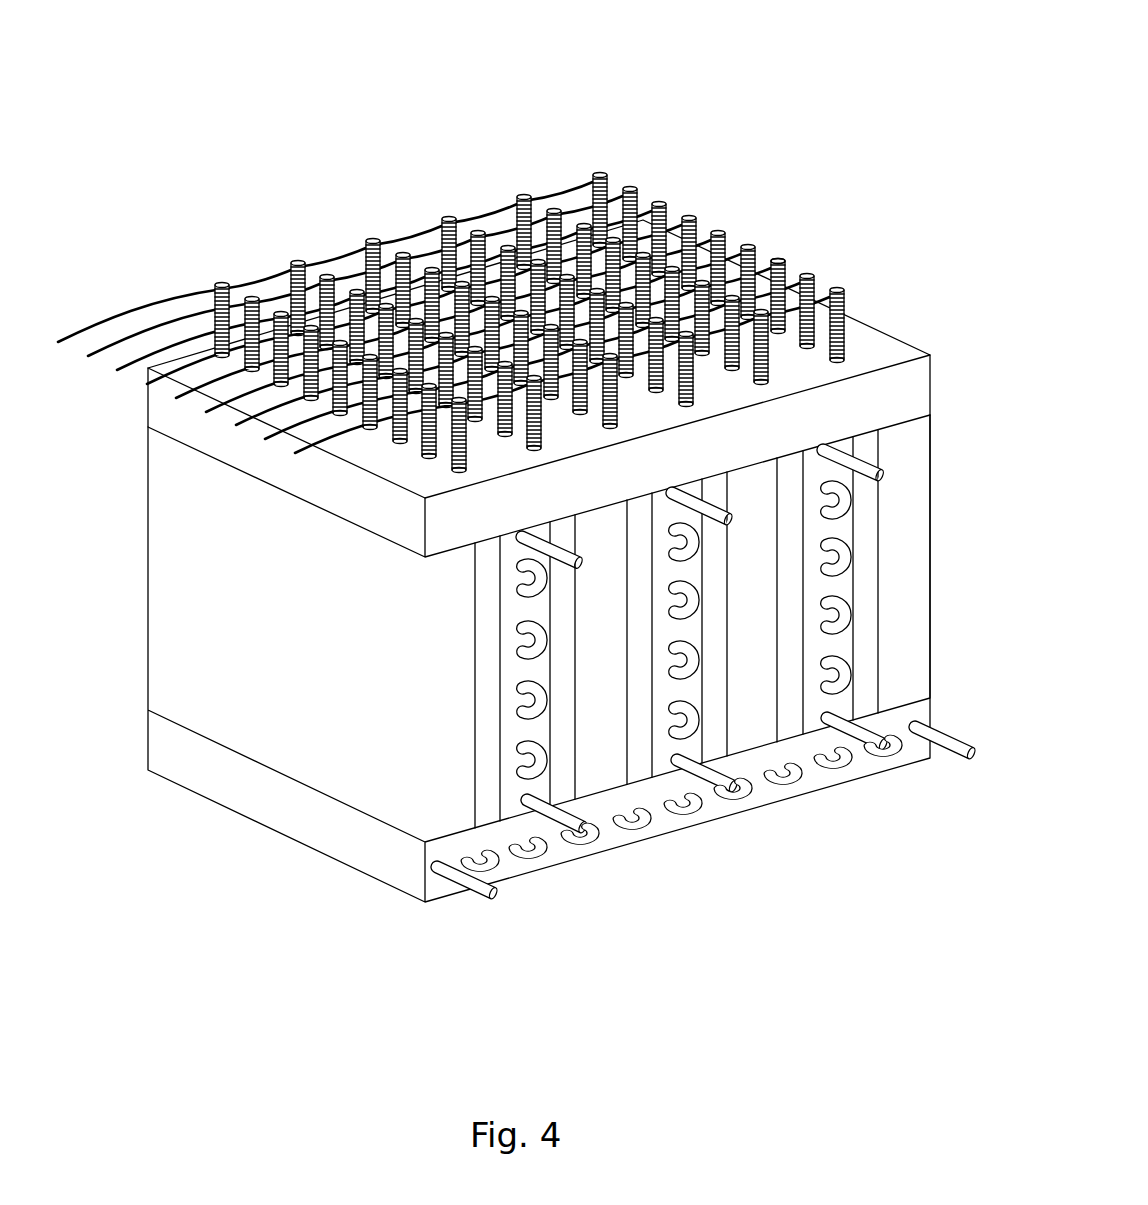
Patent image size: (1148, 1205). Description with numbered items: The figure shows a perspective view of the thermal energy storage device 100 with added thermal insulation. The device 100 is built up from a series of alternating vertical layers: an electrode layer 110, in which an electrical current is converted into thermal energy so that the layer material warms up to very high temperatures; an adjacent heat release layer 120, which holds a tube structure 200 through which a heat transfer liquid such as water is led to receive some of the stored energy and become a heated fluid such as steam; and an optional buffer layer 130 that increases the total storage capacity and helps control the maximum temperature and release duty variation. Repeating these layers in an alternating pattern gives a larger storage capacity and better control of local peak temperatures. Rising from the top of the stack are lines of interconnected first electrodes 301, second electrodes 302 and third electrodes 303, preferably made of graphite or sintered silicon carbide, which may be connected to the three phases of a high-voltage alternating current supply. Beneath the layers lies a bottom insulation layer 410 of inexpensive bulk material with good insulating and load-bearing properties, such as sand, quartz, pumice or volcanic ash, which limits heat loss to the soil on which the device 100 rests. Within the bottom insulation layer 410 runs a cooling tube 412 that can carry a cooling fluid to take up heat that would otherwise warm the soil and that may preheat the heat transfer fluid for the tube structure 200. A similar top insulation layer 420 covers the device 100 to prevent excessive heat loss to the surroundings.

The thermal energy storage device 100 is at (707, 118).
The electrode layer 110 is at (488, 745).
The heat release layer 120 is at (507, 782).
The buffer layer 130 is at (597, 742).
The tube structure 200 is at (528, 655).
The first electrode 301 is at (845, 300).
The second electrode 302 is at (813, 273).
The third electrode 303 is at (780, 258).
The bottom insulation layer 410 is at (277, 803).
The cooling tube 412 is at (780, 777).
The top insulation layer 420 is at (203, 432).